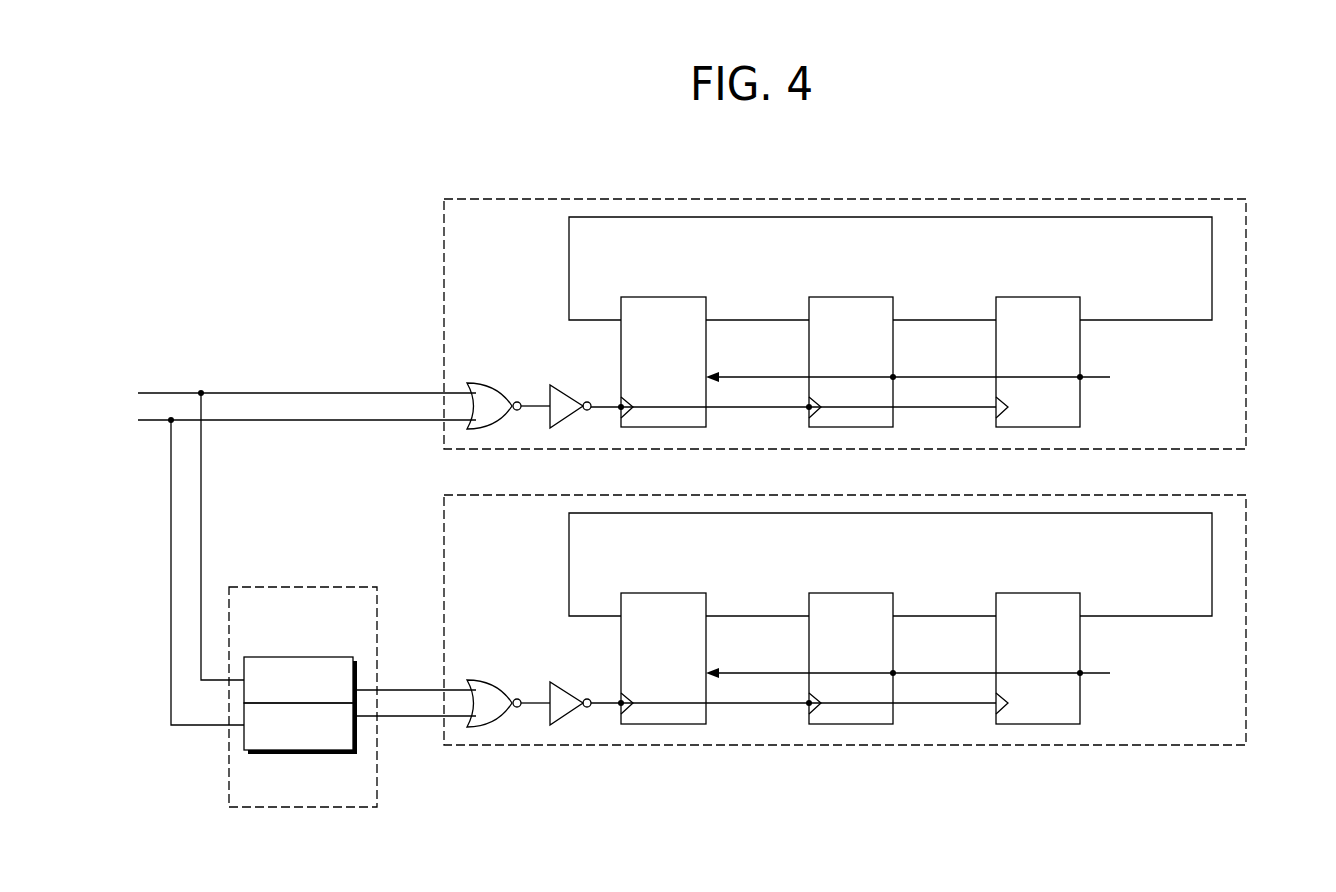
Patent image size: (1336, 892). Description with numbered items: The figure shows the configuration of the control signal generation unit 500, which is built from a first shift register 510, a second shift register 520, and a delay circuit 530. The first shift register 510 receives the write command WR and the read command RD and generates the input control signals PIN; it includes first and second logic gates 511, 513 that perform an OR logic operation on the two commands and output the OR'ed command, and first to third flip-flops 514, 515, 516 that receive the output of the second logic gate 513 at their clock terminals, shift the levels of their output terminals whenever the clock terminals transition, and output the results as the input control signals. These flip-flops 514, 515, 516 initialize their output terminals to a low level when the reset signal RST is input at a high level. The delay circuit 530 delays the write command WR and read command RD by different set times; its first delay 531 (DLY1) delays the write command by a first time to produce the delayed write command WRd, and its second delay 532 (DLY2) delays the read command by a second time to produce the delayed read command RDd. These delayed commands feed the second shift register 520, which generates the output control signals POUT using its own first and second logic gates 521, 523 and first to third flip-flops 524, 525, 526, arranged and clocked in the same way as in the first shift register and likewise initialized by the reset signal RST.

The control signal generation unit 500 is at (265, 195).
The first shift register 510 is at (1241, 199).
The first logic gate 511 is at (514, 372).
The second logic gate 513 is at (585, 374).
The first flip-flop 514 is at (695, 297).
The second flip-flop 515 is at (883, 297).
The third flip-flop 516 is at (1070, 297).
The second shift register 520 is at (1241, 495).
The first logic gate 521 is at (514, 669).
The second logic gate 523 is at (585, 671).
The first flip-flop 524 is at (695, 593).
The second flip-flop 525 is at (883, 593).
The third flip-flop 526 is at (1070, 593).
The delay circuit 530 is at (313, 587).
The first delay 531 is at (313, 657).
The second delay 532 is at (313, 753).